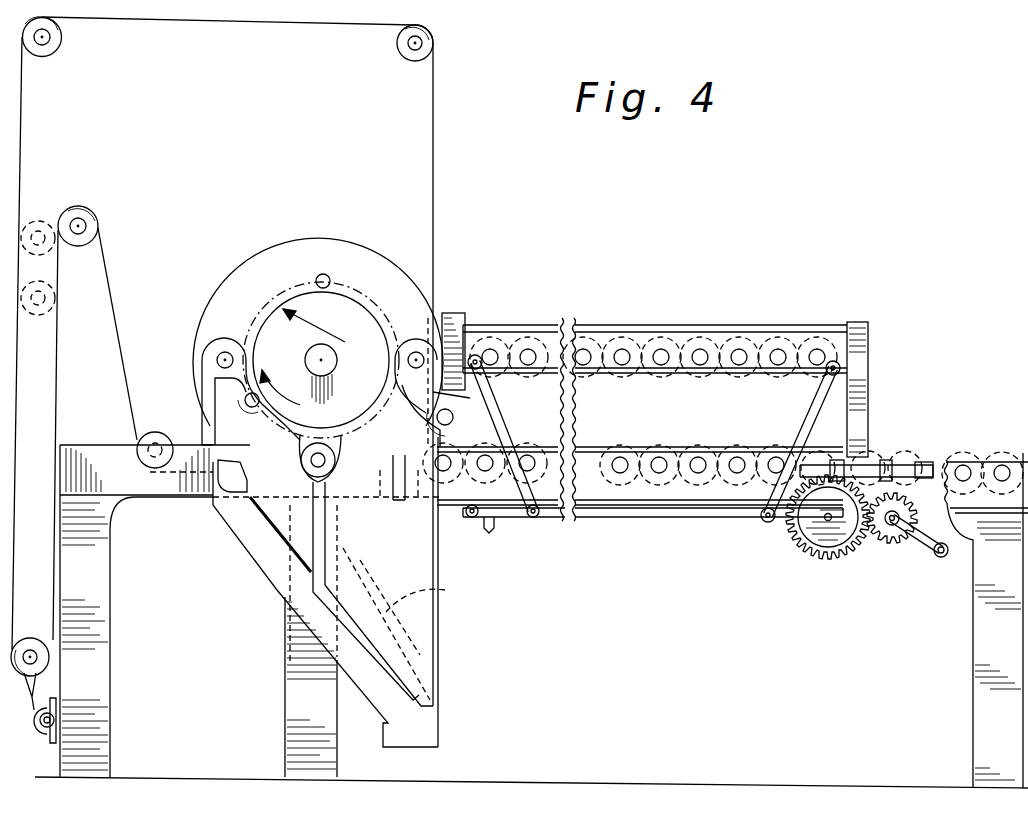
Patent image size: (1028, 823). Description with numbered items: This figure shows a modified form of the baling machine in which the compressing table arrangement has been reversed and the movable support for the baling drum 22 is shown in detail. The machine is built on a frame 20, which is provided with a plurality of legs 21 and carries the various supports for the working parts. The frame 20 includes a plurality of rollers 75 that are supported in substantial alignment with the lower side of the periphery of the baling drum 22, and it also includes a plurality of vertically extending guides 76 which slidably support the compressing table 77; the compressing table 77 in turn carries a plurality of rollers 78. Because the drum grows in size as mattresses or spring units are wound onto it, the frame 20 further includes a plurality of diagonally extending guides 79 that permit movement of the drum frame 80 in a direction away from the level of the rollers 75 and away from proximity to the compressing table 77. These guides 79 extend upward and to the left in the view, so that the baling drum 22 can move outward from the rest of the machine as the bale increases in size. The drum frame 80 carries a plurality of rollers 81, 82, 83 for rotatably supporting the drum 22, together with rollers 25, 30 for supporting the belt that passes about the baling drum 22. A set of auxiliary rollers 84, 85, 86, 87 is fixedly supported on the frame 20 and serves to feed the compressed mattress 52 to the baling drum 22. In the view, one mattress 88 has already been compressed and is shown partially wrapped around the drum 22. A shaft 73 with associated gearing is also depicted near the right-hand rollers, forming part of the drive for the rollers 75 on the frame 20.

The frame 20 is at (972, 598).
The legs 21 is at (436, 232).
The baling drum 22 is at (345, 308).
The roller 25 is at (232, 515).
The roller 30 is at (433, 392).
The compressed mattress 52 is at (603, 392).
The shaft 73 is at (870, 462).
The rollers 75 is at (664, 446).
The vertically extending guides 76 is at (868, 404).
The compressing table 77 is at (641, 335).
The rollers 78 is at (667, 345).
The diagonally extending guides 79 is at (440, 590).
The drum frame 80 is at (440, 632).
The roller 81 is at (207, 345).
The roller 82 is at (437, 342).
The roller 83 is at (341, 570).
The auxiliary roller 84 is at (383, 505).
The auxiliary roller 85 is at (394, 616).
The auxiliary roller 86 is at (440, 522).
The auxiliary roller 87 is at (474, 518).
The mattress 88 is at (534, 518).